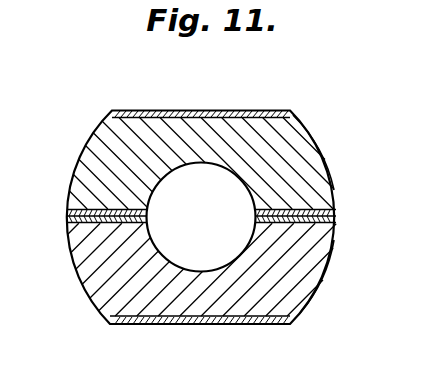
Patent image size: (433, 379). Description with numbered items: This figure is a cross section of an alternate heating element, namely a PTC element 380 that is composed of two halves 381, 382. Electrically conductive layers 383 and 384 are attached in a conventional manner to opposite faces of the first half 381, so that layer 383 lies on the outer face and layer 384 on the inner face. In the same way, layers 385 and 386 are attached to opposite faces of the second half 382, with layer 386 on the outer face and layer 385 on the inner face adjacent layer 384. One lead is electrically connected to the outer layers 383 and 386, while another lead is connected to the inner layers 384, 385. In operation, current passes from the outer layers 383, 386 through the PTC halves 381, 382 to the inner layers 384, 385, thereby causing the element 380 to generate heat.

The PTC element 380 is at (90, 100).
The half 381 is at (98, 165).
The half 382 is at (92, 276).
The electrically conductive layer 383 is at (229, 111).
The electrically conductive layer 384 is at (331, 207).
The electrically conductive layer 385 is at (332, 229).
The electrically conductive layer 386 is at (221, 325).